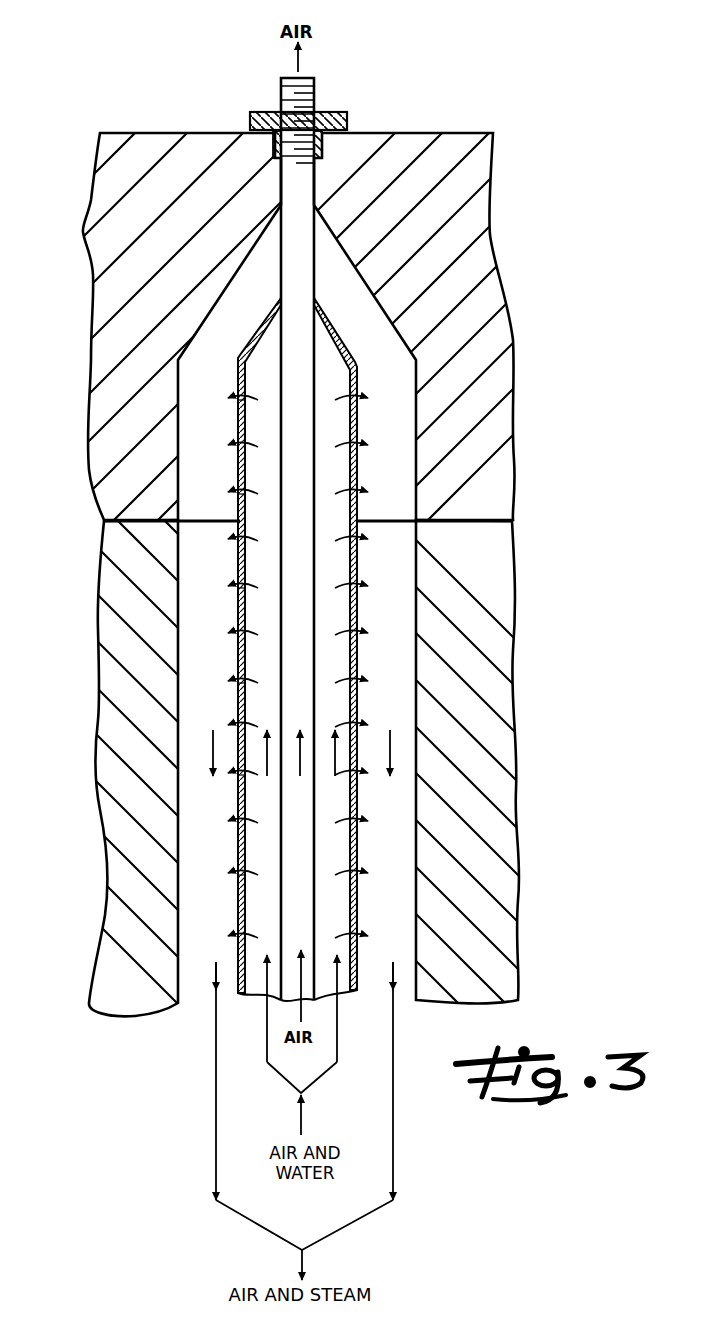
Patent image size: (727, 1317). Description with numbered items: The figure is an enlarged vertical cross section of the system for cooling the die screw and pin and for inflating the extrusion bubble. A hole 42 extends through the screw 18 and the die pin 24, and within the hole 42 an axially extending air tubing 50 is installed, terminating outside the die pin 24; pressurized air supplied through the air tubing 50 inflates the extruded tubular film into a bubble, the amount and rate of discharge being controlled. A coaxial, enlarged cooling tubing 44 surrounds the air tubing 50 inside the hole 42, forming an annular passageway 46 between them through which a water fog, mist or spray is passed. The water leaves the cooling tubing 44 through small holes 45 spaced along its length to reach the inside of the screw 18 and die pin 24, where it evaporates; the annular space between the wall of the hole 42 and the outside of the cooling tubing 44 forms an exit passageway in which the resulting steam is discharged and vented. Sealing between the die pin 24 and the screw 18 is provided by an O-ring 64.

The screw 18 is at (97, 621).
The die pin 24 is at (108, 305).
The hole 42 is at (412, 680).
The cooling tubing 44 is at (357, 626).
The small hole 45 is at (362, 446).
The annular passageway 46 is at (258, 567).
The air tubing 50 is at (300, 272).
The O-ring 64 is at (321, 165).